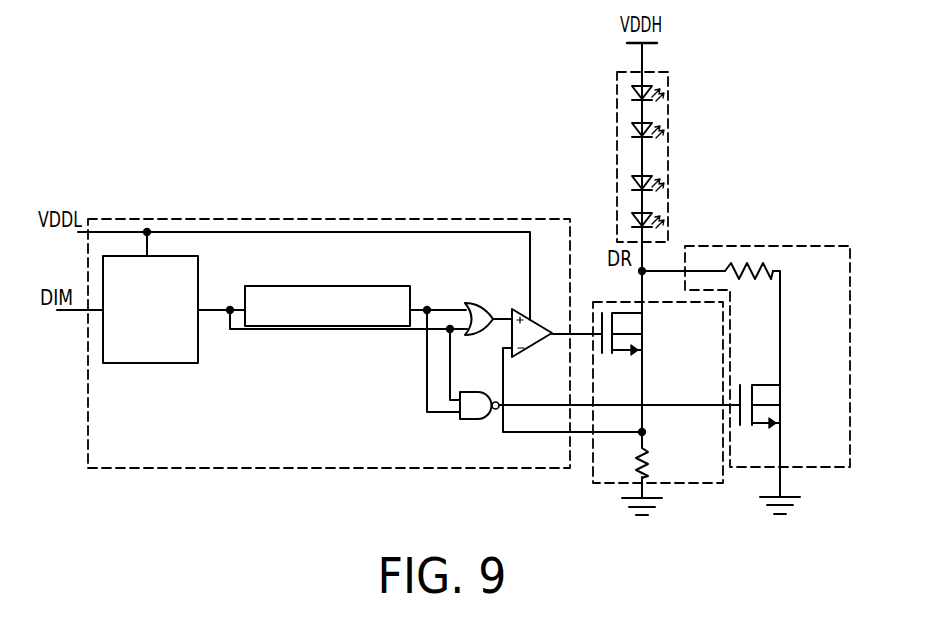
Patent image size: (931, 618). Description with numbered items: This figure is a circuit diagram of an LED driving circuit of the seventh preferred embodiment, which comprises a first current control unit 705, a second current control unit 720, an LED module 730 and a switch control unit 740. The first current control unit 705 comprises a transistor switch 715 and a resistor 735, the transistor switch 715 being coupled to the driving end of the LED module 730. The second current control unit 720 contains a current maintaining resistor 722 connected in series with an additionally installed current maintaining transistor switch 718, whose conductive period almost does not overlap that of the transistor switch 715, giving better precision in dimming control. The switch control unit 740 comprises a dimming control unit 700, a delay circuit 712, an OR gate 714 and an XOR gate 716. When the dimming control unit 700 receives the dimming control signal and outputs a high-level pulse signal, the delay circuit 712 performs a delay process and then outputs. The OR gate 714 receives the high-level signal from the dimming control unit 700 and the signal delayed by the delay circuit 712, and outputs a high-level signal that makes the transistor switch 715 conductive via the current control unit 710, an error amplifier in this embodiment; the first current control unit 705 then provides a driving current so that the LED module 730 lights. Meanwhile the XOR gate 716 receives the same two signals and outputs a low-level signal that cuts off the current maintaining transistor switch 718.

The dimming control unit 700 is at (152, 363).
The first current control unit 705 is at (690, 486).
The current control unit 710 is at (527, 345).
The delay circuit 712 is at (318, 286).
The OR gate 714 is at (481, 336).
The transistor switch 715 is at (646, 338).
The XOR gate 716 is at (462, 420).
The current maintaining transistor switch 718 is at (781, 417).
The second current control unit 720 is at (743, 246).
The current maintaining resistor 722 is at (731, 277).
The LED module 730 is at (616, 137).
The resistor 735 is at (648, 462).
The switch control unit 740 is at (415, 219).